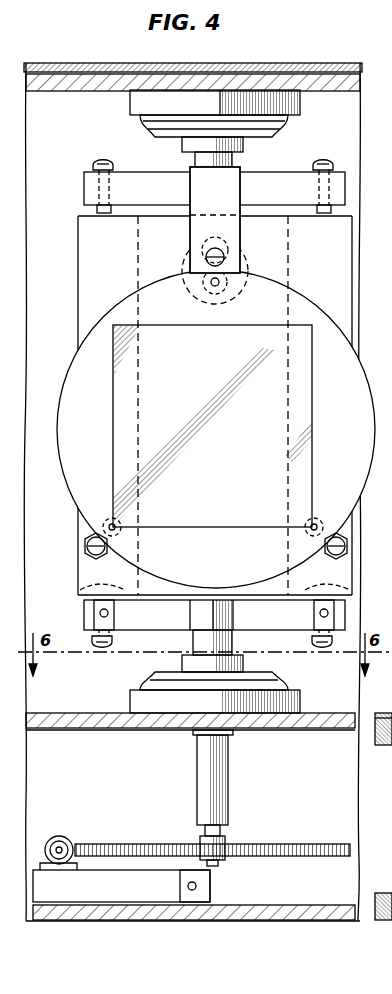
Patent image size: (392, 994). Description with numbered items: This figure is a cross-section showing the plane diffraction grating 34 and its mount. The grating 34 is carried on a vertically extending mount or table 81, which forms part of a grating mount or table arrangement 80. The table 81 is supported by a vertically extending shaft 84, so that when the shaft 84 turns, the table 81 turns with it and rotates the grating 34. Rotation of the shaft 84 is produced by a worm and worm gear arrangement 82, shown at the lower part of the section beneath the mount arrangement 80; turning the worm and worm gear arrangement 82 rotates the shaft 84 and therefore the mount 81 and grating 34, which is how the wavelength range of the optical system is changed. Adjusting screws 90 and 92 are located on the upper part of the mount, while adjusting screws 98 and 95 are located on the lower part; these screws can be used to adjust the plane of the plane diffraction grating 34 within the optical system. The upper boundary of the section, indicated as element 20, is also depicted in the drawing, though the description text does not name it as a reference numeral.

The top plate 20 is at (253, 63).
The adjusting screw 90 is at (113, 146).
The adjusting screw 92 is at (329, 146).
The mount or table 81 is at (335, 275).
The plane diffraction grating 34 is at (278, 430).
The adjusting screw 98 is at (96, 657).
The adjusting screw 95 is at (323, 657).
The grating mount or table arrangement 80 is at (264, 740).
The shaft 84 is at (205, 765).
The worm and worm gear arrangement 82 is at (240, 864).